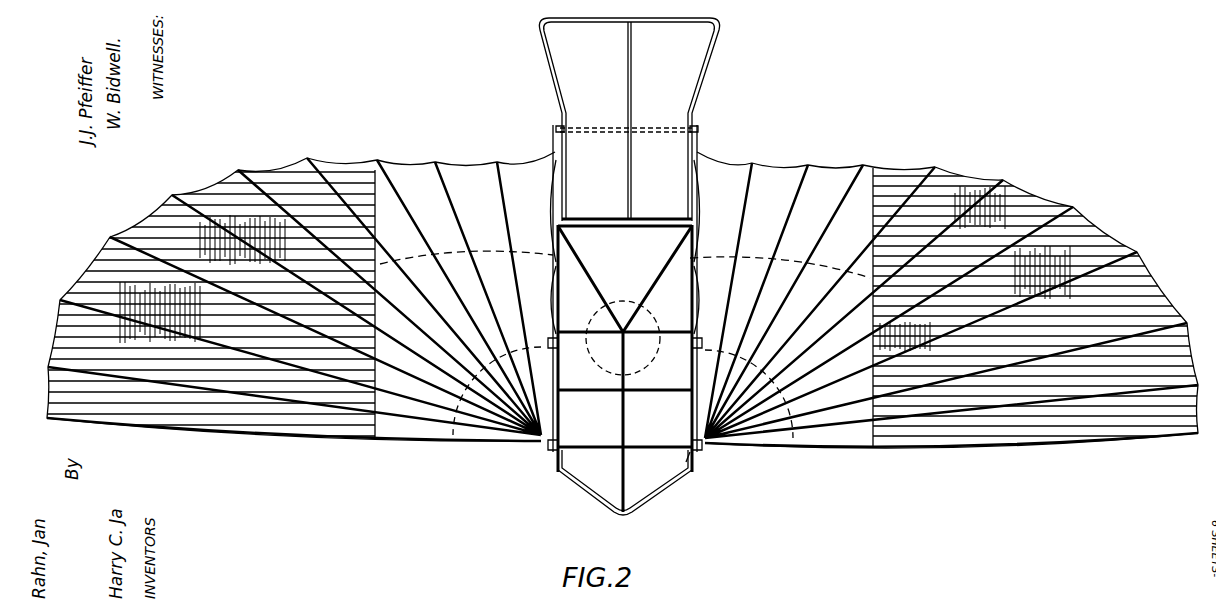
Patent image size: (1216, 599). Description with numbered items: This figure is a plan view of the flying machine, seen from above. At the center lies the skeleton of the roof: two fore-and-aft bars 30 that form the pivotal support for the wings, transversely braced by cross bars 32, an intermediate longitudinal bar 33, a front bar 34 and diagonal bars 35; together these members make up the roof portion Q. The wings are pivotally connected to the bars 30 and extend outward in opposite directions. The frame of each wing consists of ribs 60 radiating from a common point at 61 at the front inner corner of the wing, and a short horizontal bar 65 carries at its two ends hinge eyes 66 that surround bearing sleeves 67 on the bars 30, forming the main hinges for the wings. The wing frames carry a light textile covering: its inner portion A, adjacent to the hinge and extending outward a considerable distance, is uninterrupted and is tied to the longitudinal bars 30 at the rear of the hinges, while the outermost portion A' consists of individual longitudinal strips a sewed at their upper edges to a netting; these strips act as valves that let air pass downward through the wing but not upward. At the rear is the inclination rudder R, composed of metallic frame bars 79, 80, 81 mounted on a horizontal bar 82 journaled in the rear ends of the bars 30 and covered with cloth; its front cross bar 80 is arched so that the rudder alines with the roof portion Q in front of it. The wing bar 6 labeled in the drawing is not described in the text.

The wing bottom frame bar 6 is at (853, 449).
The fore-and-aft bar 30 is at (559, 378).
The cross bar 32 is at (636, 228).
The intermediate longitudinal bar 33 is at (621, 413).
The front bar 34 is at (657, 502).
The diagonal bar 35 is at (598, 278).
The rib 60 is at (842, 350).
The common point of the ribs 61 is at (704, 449).
The short horizontal bar 65 is at (718, 345).
The hinge eye 66 is at (690, 456).
The bearing sleeve 67 is at (550, 452).
The rudder frame bar 79 is at (709, 60).
The front cross bar 80 is at (627, 210).
The rudder frame bar 81 is at (627, 51).
The horizontal bar 82 is at (647, 127).
The inclination rudder R is at (673, 46).
The roof portion Q is at (623, 321).
The inner portion of the wing covering A is at (836, 296).
The outermost portion of the wing A' is at (1079, 309).
The longitudinal strip a is at (1108, 442).